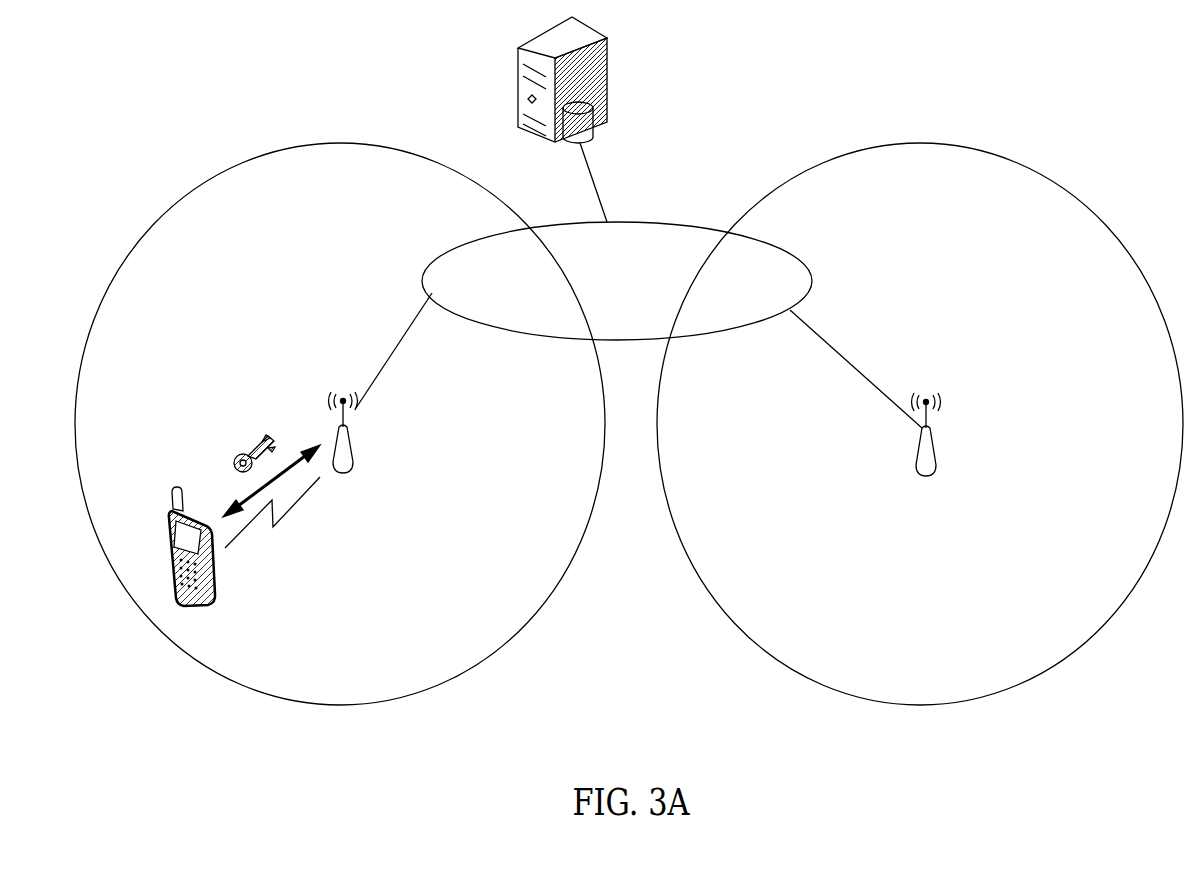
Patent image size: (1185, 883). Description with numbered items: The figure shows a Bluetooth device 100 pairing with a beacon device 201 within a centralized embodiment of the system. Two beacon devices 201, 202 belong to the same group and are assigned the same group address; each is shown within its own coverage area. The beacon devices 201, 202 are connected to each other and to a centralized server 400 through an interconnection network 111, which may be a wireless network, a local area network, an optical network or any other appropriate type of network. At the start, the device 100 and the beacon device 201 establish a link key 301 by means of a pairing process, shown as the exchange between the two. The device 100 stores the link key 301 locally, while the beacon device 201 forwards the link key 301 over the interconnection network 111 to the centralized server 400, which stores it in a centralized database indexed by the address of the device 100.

The Bluetooth device 100 is at (158, 555).
The interconnection network 111 is at (617, 281).
The beacon device 201 is at (367, 465).
The beacon device 202 is at (913, 478).
The link key 301 is at (232, 432).
The centralized server 400 is at (622, 53).